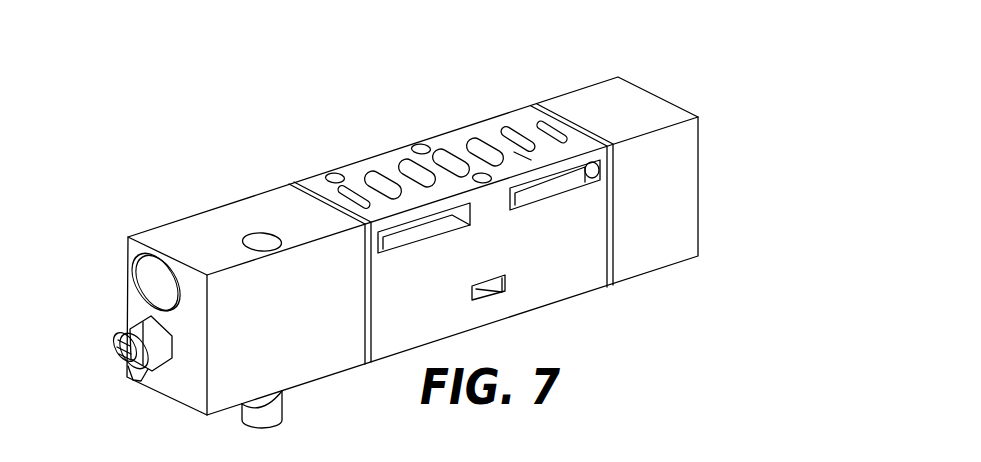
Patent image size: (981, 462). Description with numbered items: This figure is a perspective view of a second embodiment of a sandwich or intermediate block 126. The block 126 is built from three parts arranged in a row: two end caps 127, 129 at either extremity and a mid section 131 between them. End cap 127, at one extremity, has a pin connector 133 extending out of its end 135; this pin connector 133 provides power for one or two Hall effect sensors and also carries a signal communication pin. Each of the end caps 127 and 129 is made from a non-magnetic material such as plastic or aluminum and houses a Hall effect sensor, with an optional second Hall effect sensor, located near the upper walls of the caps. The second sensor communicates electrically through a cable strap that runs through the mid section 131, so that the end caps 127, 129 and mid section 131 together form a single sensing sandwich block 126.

The sandwich block 126 is at (688, 84).
The end cap 127 is at (211, 215).
The end cap 129 is at (580, 92).
The mid section 131 is at (542, 289).
The pin connector 133 is at (143, 377).
The end 135 is at (133, 303).